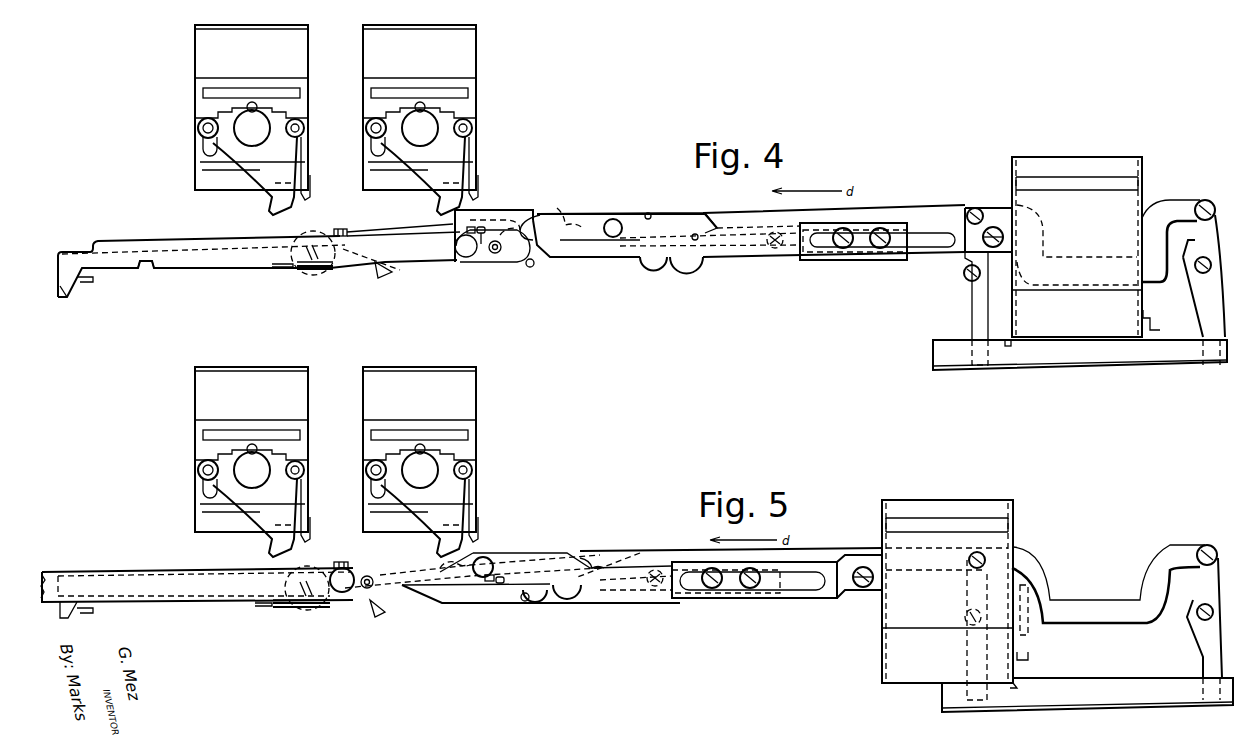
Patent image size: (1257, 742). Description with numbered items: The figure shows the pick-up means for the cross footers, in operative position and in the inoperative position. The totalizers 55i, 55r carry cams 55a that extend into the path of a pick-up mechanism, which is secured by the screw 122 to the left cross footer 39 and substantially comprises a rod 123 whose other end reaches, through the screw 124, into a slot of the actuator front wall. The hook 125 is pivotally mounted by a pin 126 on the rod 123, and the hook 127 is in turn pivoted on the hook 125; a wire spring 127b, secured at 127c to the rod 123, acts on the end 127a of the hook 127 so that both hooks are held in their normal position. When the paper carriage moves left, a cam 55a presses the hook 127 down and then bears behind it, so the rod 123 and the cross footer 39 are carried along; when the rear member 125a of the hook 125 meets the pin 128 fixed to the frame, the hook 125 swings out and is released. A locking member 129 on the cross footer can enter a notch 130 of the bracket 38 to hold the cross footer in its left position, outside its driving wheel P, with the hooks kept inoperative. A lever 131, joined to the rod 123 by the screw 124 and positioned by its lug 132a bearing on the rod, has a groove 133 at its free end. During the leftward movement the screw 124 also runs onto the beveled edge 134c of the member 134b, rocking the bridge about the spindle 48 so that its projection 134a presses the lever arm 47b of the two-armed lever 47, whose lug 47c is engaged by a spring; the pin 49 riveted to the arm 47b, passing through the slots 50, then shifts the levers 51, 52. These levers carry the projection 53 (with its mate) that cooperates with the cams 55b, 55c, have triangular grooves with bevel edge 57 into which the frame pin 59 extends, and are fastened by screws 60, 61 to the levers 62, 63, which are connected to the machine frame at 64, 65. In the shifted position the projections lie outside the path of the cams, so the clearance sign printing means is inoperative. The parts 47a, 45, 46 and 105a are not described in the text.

In FIG. 4, the totalizer 55i is at (251, 99).
In FIG. 5, the totalizer 55i is at (251, 441).
In FIG. 4, the totalizer 55r is at (419, 99).
In FIG. 5, the totalizer 55r is at (419, 441).
In FIG. 4, the cam 55a is at (255, 176).
In FIG. 5, the cam 55a is at (255, 518).
In FIG. 4, the cam 55b is at (320, 168).
In FIG. 5, the cam 55b is at (320, 510).
In FIG. 4, the cam 55c is at (447, 176).
In FIG. 5, the cam 55c is at (447, 518).
In FIG. 4, the slide bar 47a is at (73, 250).
In FIG. 5, the slide bar 47a is at (75, 585).
In FIG. 4, the bracket 45 is at (93, 280).
In FIG. 5, the bracket 45 is at (92, 613).
In FIG. 4, the foot 46 is at (66, 288).
In FIG. 5, the foot 46 is at (63, 618).
In FIG. 4, the groove 133 is at (145, 269).
In FIG. 4, the lever 131 is at (222, 268).
In FIG. 5, the lever 131 is at (140, 602).
In FIG. 4, the lug 47c is at (283, 268).
In FIG. 5, the lug 47c is at (270, 606).
In FIG. 4, the spindle 48 is at (297, 266).
In FIG. 5, the spindle 48 is at (290, 603).
In FIG. 4, the two-armed lever 47 is at (313, 270).
In FIG. 5, the two-armed lever 47 is at (310, 607).
In FIG. 4, the projection 134a is at (335, 229).
In FIG. 5, the projection 134a is at (335, 562).
In FIG. 4, the member 134b is at (325, 268).
In FIG. 5, the member 134b is at (325, 607).
In FIG. 4, the beveled edge 134c is at (385, 275).
In FIG. 5, the beveled edge 134c is at (378, 617).
In FIG. 4, the lever arm 47b is at (420, 229).
In FIG. 5, the lever arm 47b is at (420, 604).
In FIG. 4, the lug 132a is at (468, 242).
In FIG. 4, the projection 53 is at (465, 208).
In FIG. 5, the projection 53 is at (470, 556).
In FIG. 4, the pin 49 is at (472, 234).
In FIG. 5, the pin 49 is at (489, 582).
In FIG. 4, the slot 50 is at (481, 245).
In FIG. 5, the slot 50 is at (500, 584).
In FIG. 4, the screw 124 is at (496, 254).
In FIG. 5, the screw 124 is at (372, 588).
In FIG. 4, the pin 128 is at (531, 267).
In FIG. 5, the pin 128 is at (525, 601).
In FIG. 4, the hook 125 is at (525, 225).
In FIG. 5, the hook 125 is at (395, 570).
In FIG. 4, the pin 59 is at (560, 226).
In FIG. 5, the pin 59 is at (585, 558).
In FIG. 4, the hook 127 is at (585, 218).
In FIG. 5, the hook 127 is at (440, 566).
In FIG. 4, the pin 126 is at (612, 238).
In FIG. 5, the pin 126 is at (480, 578).
In FIG. 4, the bevel edge 57 is at (548, 250).
In FIG. 5, the bevel edge 57 is at (585, 598).
In FIG. 4, the rear member 125a is at (652, 262).
In FIG. 5, the rear member 125a is at (540, 598).
In FIG. 4, the lever 51 is at (660, 213).
In FIG. 5, the lever 51 is at (615, 555).
In FIG. 4, the end 127a is at (717, 212).
In FIG. 5, the end 127a is at (595, 552).
In FIG. 4, the wire spring 127b is at (745, 230).
In FIG. 5, the wire spring 127b is at (645, 555).
In FIG. 4, the securing point 127c is at (778, 248).
In FIG. 5, the securing point 127c is at (668, 600).
In FIG. 4, the rod 123 is at (755, 250).
In FIG. 5, the rod 123 is at (655, 590).
In FIG. 4, the screw 60 is at (978, 208).
In FIG. 5, the screw 60 is at (968, 560).
In FIG. 4, the screw 122 is at (995, 248).
In FIG. 5, the screw 122 is at (862, 590).
In FIG. 4, the lever 62 is at (972, 310).
In FIG. 5, the lever 62 is at (975, 657).
In FIG. 4, the connection 64 is at (964, 273).
In FIG. 5, the connection 64 is at (965, 617).
In FIG. 4, the left cross footer 39 is at (1075, 163).
In FIG. 5, the left cross footer 39 is at (952, 505).
In FIG. 4, the notch 130 is at (1011, 345).
In FIG. 5, the notch 130 is at (1013, 688).
In FIG. 4, the bracket 38 is at (1162, 362).
In FIG. 5, the bracket 38 is at (1160, 703).
In FIG. 4, the lever 52 is at (1165, 203).
In FIG. 5, the lever 52 is at (1090, 605).
In FIG. 4, the screw 61 is at (1213, 204).
In FIG. 5, the screw 61 is at (1210, 545).
In FIG. 4, the lever 63 is at (1222, 318).
In FIG. 5, the lever 63 is at (1220, 652).
In FIG. 4, the connection 65 is at (1212, 265).
In FIG. 5, the connection 65 is at (1214, 612).
In FIG. 4, the locking member 129 is at (1150, 314).
In FIG. 5, the locking member 129 is at (1028, 656).
In FIG. 5, the roller 105a is at (330, 567).
In FIG. 5, the main driving wheel P is at (1030, 600).